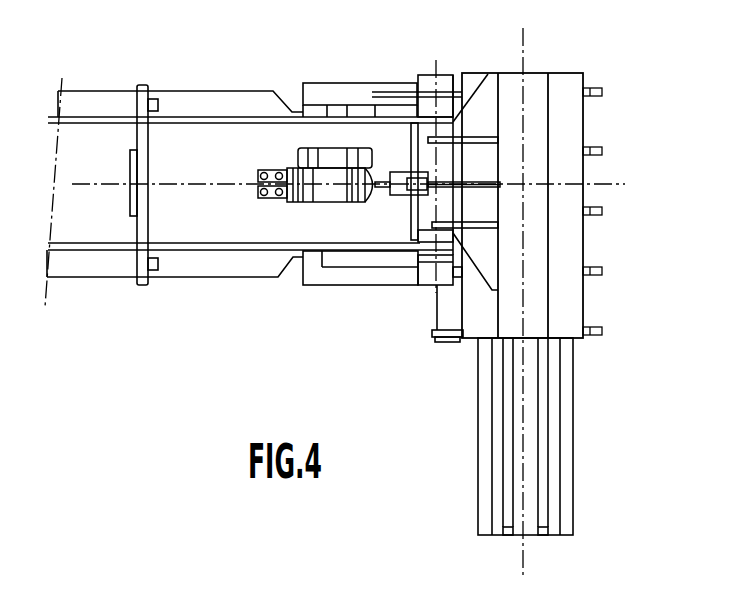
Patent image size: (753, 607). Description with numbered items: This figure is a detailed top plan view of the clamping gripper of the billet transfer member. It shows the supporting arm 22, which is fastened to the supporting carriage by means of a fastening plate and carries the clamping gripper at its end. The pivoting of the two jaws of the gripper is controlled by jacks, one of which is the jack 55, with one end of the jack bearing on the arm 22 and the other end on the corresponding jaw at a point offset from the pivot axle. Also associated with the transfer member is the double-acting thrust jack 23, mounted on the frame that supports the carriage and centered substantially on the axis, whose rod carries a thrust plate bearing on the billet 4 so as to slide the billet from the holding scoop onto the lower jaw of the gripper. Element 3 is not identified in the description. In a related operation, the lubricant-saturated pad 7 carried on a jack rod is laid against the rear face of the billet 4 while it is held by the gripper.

The support plate 3 is at (478, 178).
The billet 4 is at (567, 313).
The pad 7 is at (488, 472).
The supporting arm 22 is at (216, 152).
The double-acting thrust jack 23 is at (143, 84).
The jack 55 is at (333, 183).